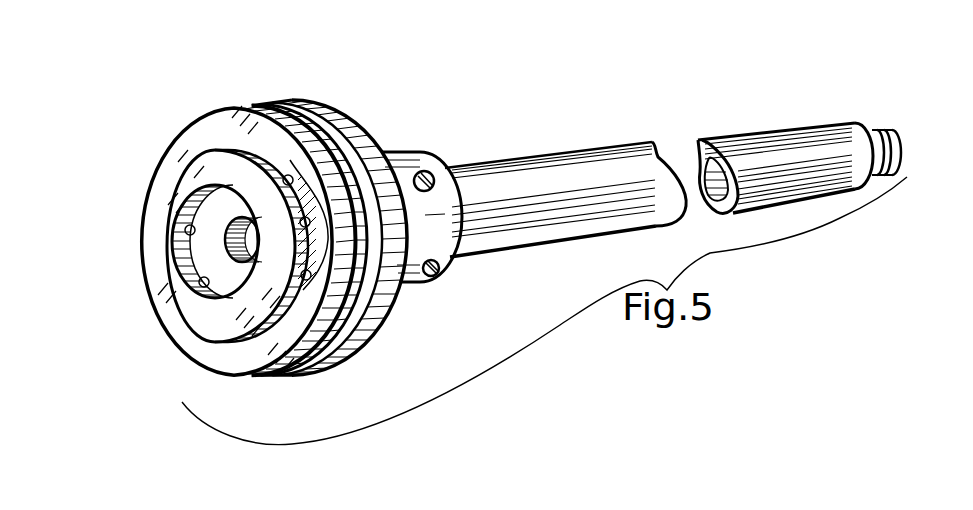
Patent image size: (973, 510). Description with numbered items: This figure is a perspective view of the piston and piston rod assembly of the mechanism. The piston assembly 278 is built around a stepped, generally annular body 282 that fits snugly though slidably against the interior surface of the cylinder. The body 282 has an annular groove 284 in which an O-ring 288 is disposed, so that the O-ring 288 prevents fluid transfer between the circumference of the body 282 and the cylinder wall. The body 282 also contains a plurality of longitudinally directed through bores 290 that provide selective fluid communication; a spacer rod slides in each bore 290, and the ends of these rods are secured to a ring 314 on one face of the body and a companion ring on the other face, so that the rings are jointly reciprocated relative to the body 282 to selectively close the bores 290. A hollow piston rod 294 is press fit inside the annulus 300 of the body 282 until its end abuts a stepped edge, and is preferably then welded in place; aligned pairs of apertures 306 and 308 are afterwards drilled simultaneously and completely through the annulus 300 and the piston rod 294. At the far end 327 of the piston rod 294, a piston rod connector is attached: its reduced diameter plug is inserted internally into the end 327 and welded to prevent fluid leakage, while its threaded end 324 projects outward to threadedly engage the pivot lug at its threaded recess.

The piston assembly 278 is at (405, 348).
The body 282 is at (196, 367).
The annular groove 284 is at (347, 133).
The O-ring 288 is at (308, 103).
The through bores 290 is at (289, 175).
The piston rod 294 is at (557, 150).
The annulus 300 is at (397, 151).
The apertures 306 is at (425, 173).
The apertures 308 is at (441, 273).
The ring 314 is at (147, 240).
The threaded end 324 is at (884, 126).
The end 327 is at (778, 133).